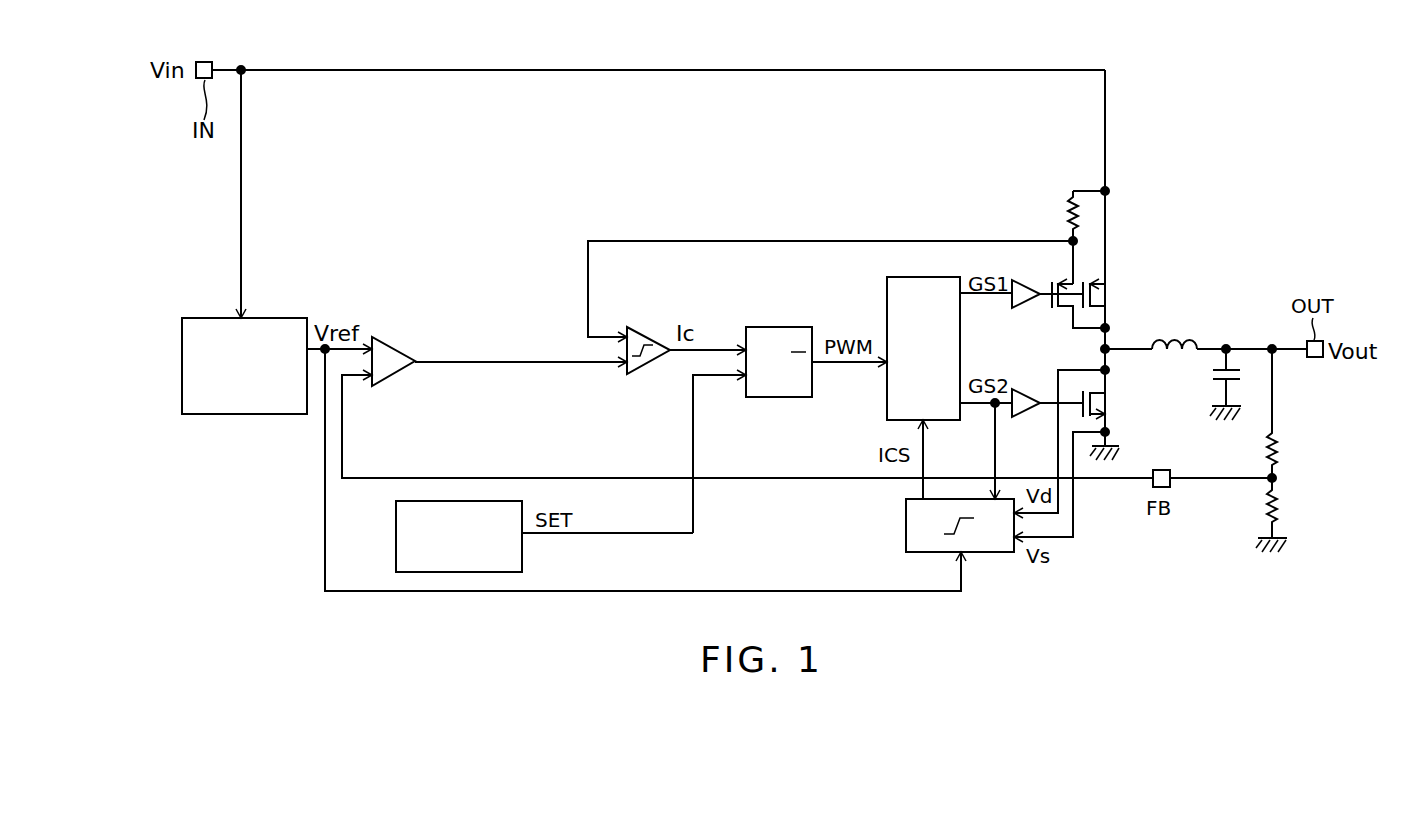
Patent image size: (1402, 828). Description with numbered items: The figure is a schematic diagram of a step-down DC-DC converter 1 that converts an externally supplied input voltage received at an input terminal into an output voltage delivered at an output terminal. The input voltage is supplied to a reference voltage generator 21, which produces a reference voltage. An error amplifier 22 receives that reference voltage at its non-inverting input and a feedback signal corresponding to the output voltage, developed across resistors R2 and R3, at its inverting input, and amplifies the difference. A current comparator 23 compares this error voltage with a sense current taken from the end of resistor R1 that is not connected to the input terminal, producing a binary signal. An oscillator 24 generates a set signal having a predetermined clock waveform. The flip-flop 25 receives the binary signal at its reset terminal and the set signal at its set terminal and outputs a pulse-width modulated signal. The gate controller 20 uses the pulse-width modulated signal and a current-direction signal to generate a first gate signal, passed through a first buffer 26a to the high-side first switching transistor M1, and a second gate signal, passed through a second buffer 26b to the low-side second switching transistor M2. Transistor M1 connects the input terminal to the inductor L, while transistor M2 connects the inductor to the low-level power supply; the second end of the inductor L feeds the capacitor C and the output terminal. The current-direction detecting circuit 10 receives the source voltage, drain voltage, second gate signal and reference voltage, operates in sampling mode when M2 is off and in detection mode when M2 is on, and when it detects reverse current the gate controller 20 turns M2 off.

The DC-DC converter 1 is at (1222, 78).
The current-direction detecting circuit 10 is at (906, 526).
The gate controller 20 is at (924, 277).
The reference voltage generator 21 is at (244, 414).
The error amplifier 22 is at (394, 337).
The current comparator 23 is at (649, 327).
The oscillator 24 is at (396, 535).
The flip-flop 25 is at (780, 327).
The first buffer 26a is at (1022, 308).
The second buffer 26b is at (1026, 389).
The first switching transistor M1 is at (1108, 296).
The second switching transistor M2 is at (1108, 406).
The resistor R1 is at (1072, 235).
The resistor R2 is at (1287, 413).
The resistor R3 is at (1282, 515).
The inductor L is at (1151, 333).
The capacitor C is at (1235, 384).